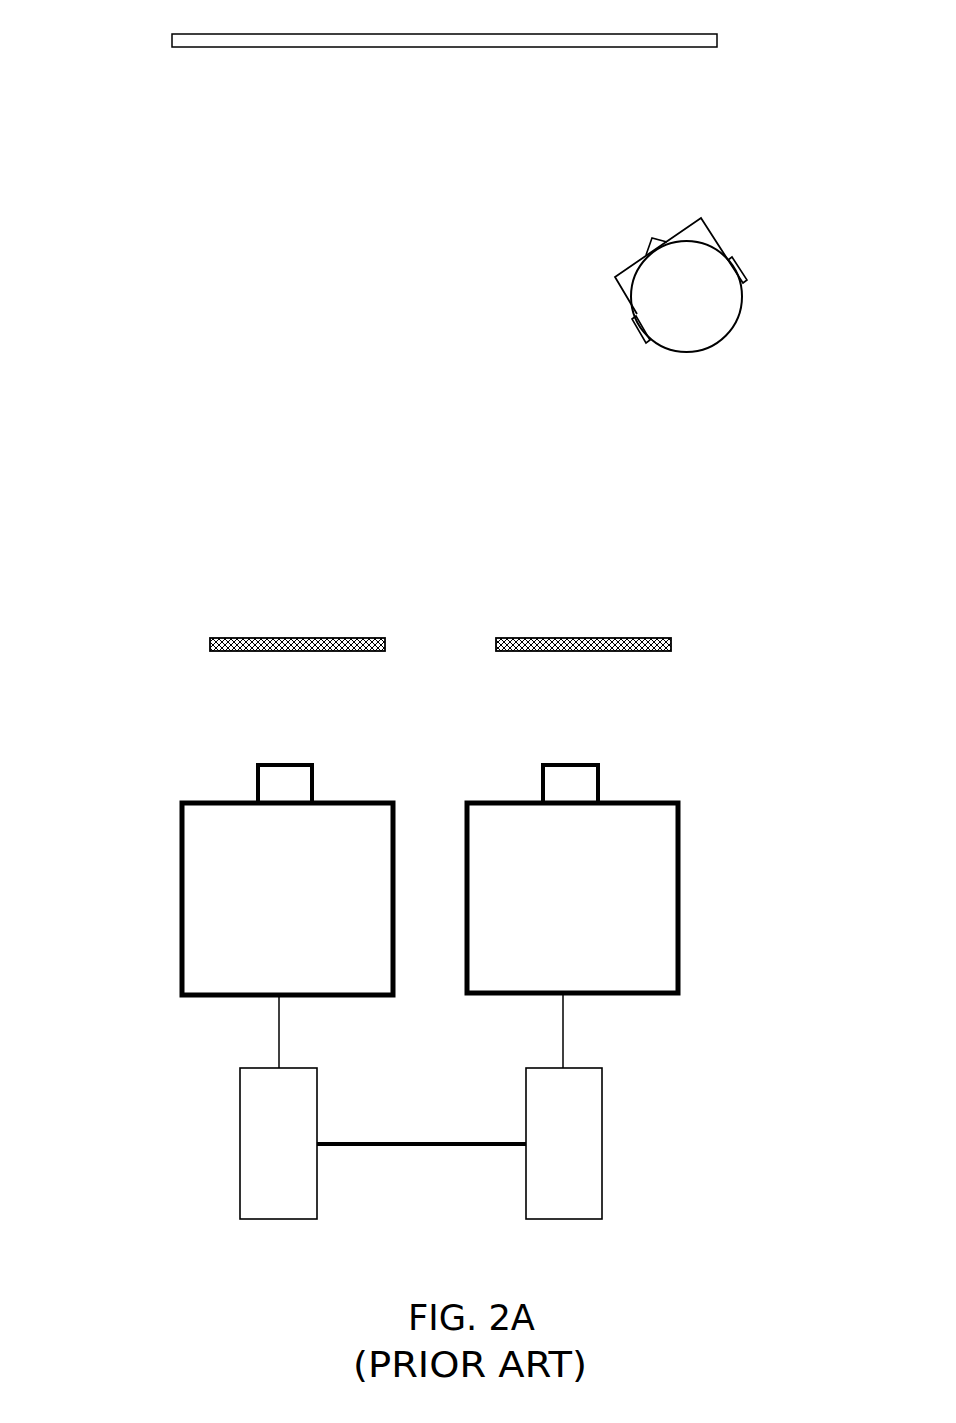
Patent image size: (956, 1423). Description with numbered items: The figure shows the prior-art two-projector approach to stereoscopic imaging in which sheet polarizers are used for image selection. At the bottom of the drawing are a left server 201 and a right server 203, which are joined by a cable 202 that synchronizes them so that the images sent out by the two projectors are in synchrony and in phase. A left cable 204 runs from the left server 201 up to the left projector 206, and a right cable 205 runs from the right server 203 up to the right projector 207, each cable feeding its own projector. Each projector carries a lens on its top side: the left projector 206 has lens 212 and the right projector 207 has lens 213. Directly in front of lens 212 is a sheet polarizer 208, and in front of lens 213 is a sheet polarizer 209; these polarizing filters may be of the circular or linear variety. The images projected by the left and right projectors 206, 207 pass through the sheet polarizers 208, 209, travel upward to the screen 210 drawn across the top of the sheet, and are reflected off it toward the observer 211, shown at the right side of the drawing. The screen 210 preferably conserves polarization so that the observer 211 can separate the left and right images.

The left server 201 is at (278, 1143).
The cable 202 is at (421, 1170).
The right server 203 is at (564, 1143).
The left cable 204 is at (248, 1031).
The right cable 205 is at (590, 1030).
The left projector 206 is at (287, 899).
The right projector 207 is at (572, 898).
The sheet polarizer 208 is at (266, 646).
The sheet polarizer 209 is at (626, 635).
The screen 210 is at (493, 33).
The observer 211 is at (721, 346).
The lens 212 is at (258, 783).
The lens 213 is at (598, 783).